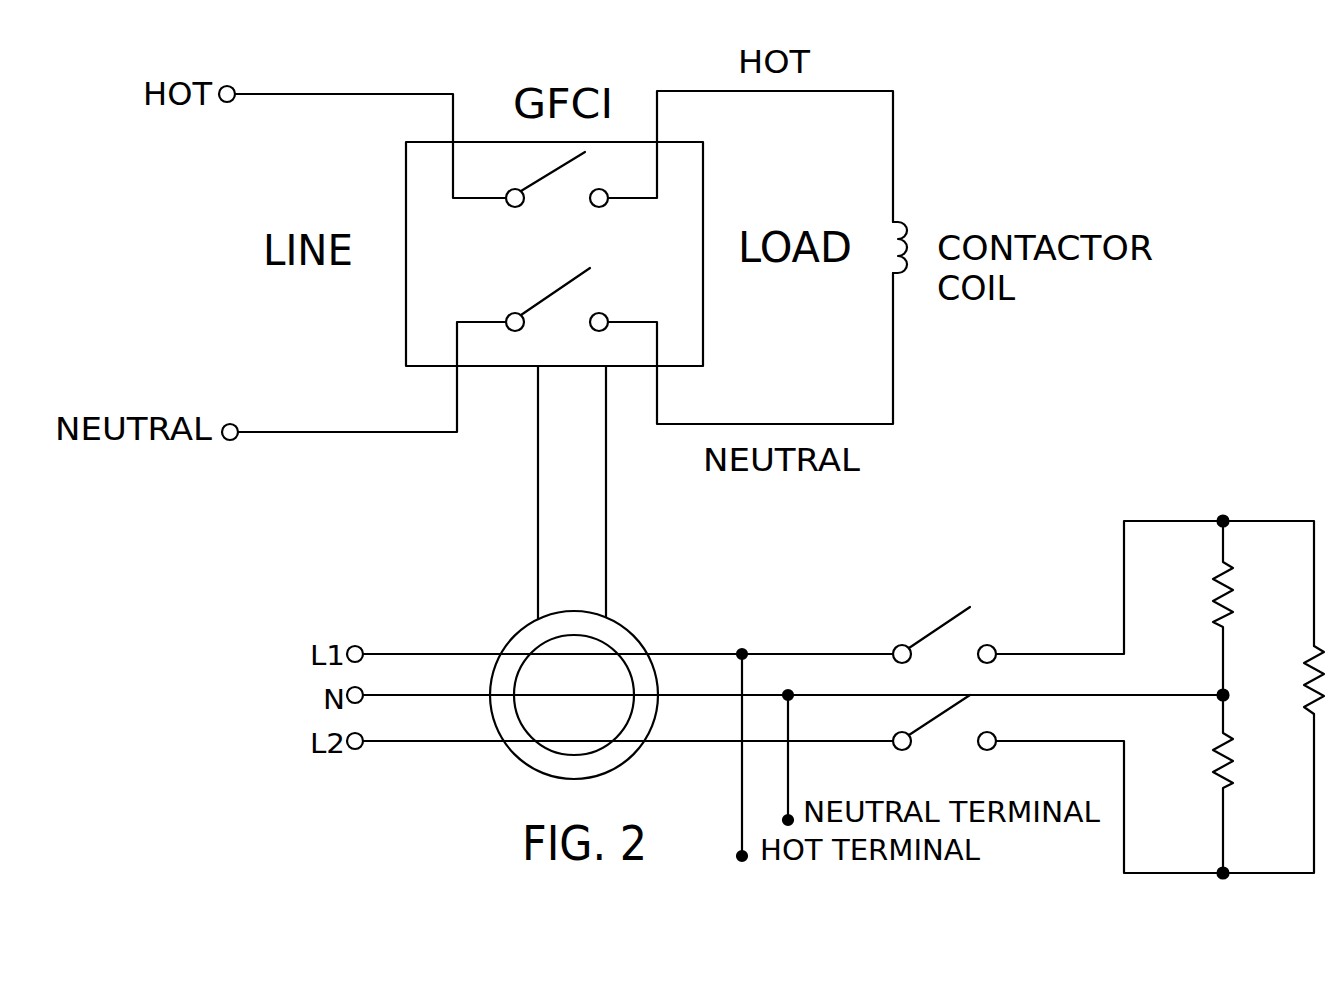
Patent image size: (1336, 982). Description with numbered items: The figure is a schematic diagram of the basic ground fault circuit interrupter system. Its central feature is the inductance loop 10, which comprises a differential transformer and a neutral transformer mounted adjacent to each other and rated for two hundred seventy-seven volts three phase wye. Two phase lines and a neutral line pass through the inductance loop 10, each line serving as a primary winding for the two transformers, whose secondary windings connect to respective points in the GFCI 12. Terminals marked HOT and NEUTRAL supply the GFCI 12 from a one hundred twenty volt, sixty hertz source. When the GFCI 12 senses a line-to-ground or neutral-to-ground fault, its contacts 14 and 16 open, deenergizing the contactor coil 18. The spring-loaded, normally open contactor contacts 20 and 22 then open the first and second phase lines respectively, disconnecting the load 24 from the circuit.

The inductance loop 10 is at (608, 613).
The GFCI 12 is at (440, 215).
The contact 14 is at (557, 173).
The contact 16 is at (568, 282).
The contactor coil 18 is at (894, 222).
The contactor contact 20 is at (957, 610).
The contactor contact 22 is at (953, 708).
The load 24 is at (1258, 585).